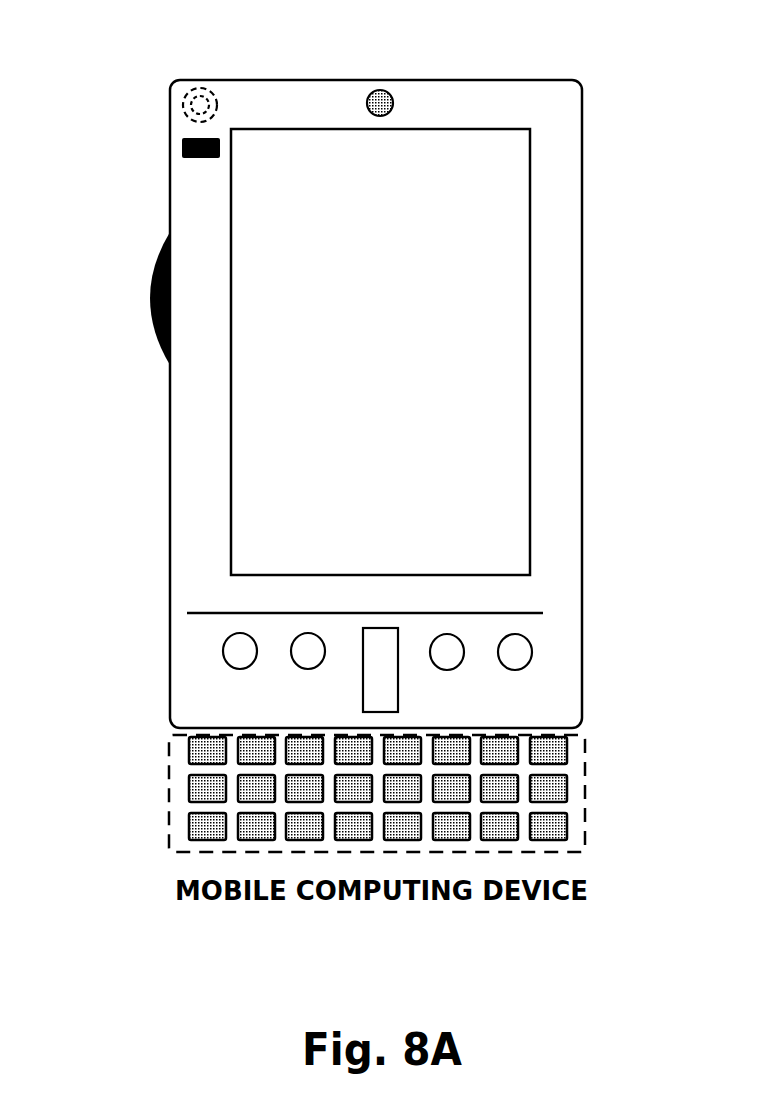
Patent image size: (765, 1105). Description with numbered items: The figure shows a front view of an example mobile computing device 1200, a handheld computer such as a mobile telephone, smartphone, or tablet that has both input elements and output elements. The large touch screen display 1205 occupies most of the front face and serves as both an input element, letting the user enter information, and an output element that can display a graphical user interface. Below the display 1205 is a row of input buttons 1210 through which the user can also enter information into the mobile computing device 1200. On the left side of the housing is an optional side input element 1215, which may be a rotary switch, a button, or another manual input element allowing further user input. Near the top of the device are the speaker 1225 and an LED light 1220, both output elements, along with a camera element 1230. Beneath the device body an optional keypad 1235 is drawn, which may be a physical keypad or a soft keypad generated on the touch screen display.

The mobile computing device 1200 is at (582, 100).
The touch screen display 1205 is at (257, 511).
The input buttons 1210 is at (516, 666).
The side input element 1215 is at (148, 307).
The LED light 1220 is at (181, 142).
The speaker 1225 is at (182, 97).
The camera 1230 is at (392, 98).
The keypad 1235 is at (167, 822).